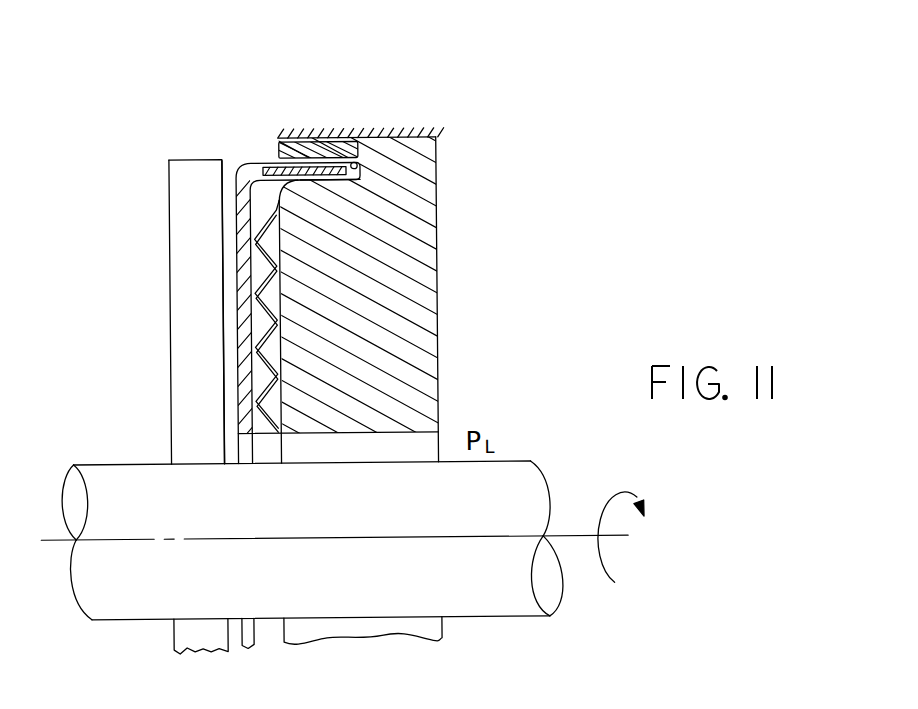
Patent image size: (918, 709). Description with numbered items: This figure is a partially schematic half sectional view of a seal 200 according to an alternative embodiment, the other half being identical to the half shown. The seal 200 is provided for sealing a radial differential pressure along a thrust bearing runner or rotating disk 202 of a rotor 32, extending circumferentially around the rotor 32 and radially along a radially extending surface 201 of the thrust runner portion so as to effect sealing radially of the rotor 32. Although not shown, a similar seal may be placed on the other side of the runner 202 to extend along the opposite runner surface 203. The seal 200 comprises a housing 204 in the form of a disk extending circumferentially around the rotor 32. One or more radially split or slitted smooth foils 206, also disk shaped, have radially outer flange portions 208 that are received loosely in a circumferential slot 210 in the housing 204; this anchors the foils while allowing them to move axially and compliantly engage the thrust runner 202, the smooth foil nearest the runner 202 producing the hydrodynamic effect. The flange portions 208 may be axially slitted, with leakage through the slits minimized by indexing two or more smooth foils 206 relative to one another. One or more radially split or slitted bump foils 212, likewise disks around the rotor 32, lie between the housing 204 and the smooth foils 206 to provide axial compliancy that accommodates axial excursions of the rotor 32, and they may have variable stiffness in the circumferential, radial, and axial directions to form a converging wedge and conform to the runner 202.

The rotor 32 is at (338, 516).
The seal 200 is at (446, 294).
The radially extending surface 201 is at (231, 164).
The thrust bearing runner 202 is at (147, 356).
The opposite runner surface 203 is at (171, 428).
The housing 204 is at (414, 373).
The smooth foils 206 is at (242, 374).
The radially outer flange portions 208 is at (279, 150).
The circumferential slot 210 is at (363, 140).
The bump foils 212 is at (252, 281).